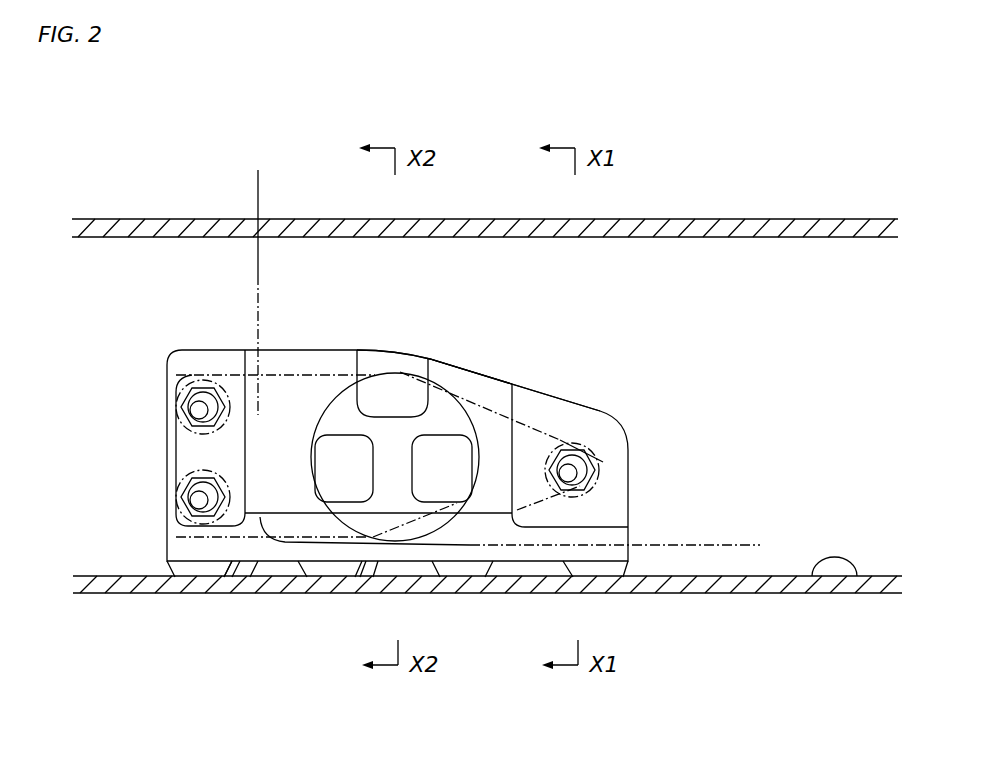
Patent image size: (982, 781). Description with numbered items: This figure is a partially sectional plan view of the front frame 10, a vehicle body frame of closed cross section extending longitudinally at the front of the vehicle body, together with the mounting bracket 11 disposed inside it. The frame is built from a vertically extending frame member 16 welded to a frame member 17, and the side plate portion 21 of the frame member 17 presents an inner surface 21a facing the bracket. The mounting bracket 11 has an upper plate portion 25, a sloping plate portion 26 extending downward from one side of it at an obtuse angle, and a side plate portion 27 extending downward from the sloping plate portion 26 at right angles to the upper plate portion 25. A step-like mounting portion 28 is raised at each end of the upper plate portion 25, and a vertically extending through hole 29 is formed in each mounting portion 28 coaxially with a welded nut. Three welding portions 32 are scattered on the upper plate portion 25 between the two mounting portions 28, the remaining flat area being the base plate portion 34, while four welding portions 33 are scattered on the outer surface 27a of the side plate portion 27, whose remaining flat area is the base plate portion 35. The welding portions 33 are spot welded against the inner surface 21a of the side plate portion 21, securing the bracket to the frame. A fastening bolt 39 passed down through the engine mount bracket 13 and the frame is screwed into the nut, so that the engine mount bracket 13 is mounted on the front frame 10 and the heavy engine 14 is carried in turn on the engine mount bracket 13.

The front frame 10 is at (851, 208).
The mounting bracket 11 is at (623, 420).
The engine mount bracket 13 is at (537, 384).
The engine 14 is at (249, 188).
The frame member 16 is at (107, 212).
The frame member 17 is at (95, 605).
The side plate portion 21 is at (793, 596).
The inner surface 21a is at (853, 582).
The upper plate portion 25 is at (313, 363).
The sloping plate portion 26 is at (510, 530).
The side plate portion 27 is at (253, 596).
The outer surface 27a is at (232, 596).
The mounting portion 28 is at (207, 362).
The through hole 29 is at (192, 410).
The welding portion 32 is at (337, 452).
The welding portion 33 is at (180, 596).
The base plate portion 34 is at (477, 377).
The base plate portion 35 is at (375, 596).
The fastening bolt 39 is at (185, 398).